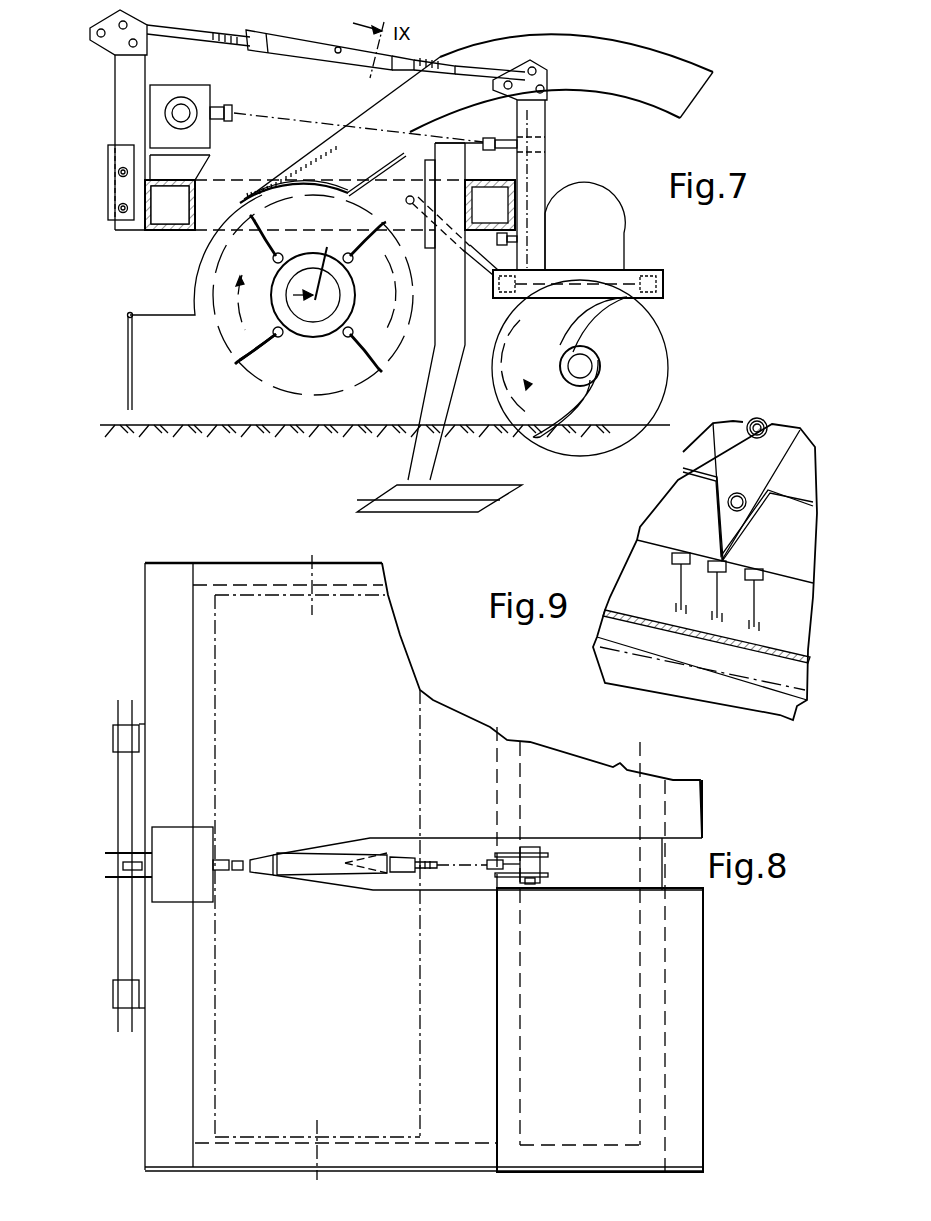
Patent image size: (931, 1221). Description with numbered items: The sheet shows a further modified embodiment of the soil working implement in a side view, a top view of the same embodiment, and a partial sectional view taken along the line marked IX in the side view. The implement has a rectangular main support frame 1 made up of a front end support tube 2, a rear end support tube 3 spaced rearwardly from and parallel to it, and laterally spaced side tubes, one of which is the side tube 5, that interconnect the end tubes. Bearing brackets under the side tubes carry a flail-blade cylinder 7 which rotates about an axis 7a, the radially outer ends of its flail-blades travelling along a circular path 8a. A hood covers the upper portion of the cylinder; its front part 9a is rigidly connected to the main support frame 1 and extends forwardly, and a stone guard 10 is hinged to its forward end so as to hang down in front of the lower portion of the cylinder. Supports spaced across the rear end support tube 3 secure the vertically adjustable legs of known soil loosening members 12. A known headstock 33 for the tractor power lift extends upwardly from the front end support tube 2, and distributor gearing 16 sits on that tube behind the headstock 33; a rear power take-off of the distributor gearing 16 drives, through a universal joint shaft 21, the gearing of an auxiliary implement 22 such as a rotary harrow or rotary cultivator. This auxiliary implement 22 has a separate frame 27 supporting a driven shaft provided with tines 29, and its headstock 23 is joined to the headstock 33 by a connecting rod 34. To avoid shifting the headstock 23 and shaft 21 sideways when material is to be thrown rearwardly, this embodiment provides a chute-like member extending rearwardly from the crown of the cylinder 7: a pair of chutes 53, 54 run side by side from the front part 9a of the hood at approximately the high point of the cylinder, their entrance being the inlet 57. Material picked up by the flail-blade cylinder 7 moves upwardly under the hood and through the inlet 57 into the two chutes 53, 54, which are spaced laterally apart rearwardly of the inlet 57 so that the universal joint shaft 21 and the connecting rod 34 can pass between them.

In FIG. 7, the main support frame 1 is at (195, 232).
In FIG. 7, the front end support tube 2 is at (150, 232).
In FIG. 8, the front end support tube 2 is at (140, 598).
In FIG. 7, the rear end support tube 3 is at (505, 198).
In FIG. 8, the side tube 5 is at (238, 565).
In FIG. 7, the flail-blade cylinder 7 is at (240, 376).
In FIG. 9, the flail-blade cylinder 7 is at (640, 595).
In FIG. 8, the flail-blade cylinder 7 is at (385, 656).
In FIG. 9, the axis 7a is at (595, 637).
In FIG. 7, the circular path 8a is at (352, 398).
In FIG. 7, the front part of the hood 9a is at (196, 278).
In FIG. 7, the stone guard 10 is at (124, 372).
In FIG. 7, the soil loosening member 12 is at (410, 472).
In FIG. 7, the distributor gearing 16 is at (206, 93).
In FIG. 8, the distributor gearing 16 is at (205, 833).
In FIG. 7, the universal joint shaft 21 is at (296, 122).
In FIG. 9, the universal joint shaft 21 is at (735, 494).
In FIG. 7, the auxiliary implement 22 is at (662, 348).
In FIG. 7, the headstock of the auxiliary implement 23 is at (540, 122).
In FIG. 8, the headstock of the auxiliary implement 23 is at (547, 880).
In FIG. 7, the frame 27 is at (665, 284).
In FIG. 8, the frame 27 is at (647, 782).
In FIG. 7, the tines 29 is at (590, 400).
In FIG. 8, the headstock 33 is at (140, 773).
In FIG. 7, the connecting rod 34 is at (215, 38).
In FIG. 9, the connecting rod 34 is at (764, 420).
In FIG. 8, the connecting rod 34 is at (300, 870).
In FIG. 7, the chute 53 is at (690, 108).
In FIG. 8, the chute 53 is at (700, 785).
In FIG. 8, the chute 54 is at (703, 1010).
In FIG. 7, the inlet 57 is at (290, 185).